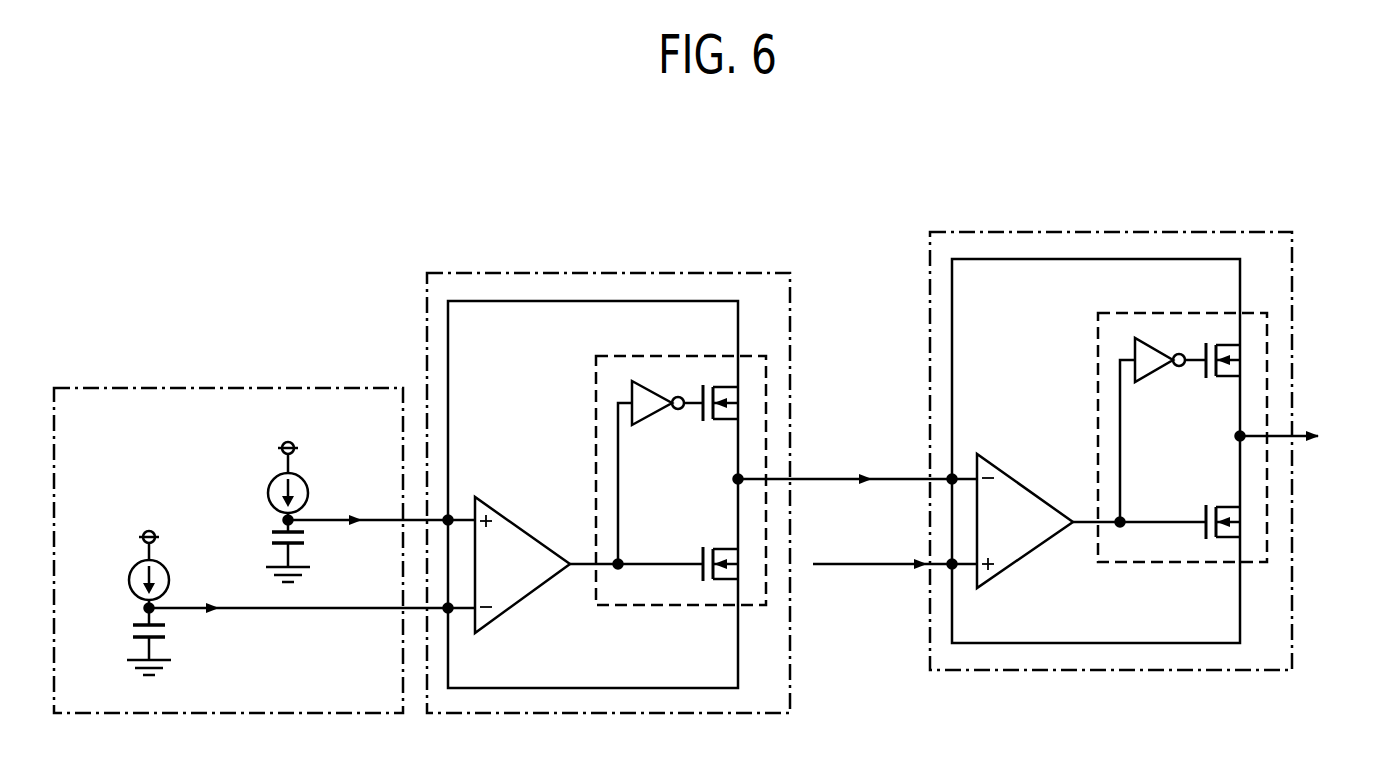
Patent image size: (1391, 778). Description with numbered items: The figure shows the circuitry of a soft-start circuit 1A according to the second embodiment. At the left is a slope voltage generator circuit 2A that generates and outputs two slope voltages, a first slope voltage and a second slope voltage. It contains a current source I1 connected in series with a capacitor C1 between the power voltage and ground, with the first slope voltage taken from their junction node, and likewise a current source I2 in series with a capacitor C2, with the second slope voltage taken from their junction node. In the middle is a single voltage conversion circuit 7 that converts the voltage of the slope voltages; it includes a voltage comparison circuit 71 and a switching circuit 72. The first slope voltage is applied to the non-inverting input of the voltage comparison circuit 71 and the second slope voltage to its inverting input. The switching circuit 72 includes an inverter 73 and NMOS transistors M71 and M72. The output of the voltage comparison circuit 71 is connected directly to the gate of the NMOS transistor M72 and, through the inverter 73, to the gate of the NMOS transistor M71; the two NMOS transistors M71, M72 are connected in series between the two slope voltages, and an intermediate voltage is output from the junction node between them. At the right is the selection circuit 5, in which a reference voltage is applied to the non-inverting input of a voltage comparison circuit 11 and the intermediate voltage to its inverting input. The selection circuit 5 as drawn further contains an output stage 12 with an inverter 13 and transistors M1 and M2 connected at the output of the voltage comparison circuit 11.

The soft-start circuit 1A is at (884, 189).
The slope voltage generator circuit 2A is at (243, 386).
The selection circuit 5 is at (1196, 227).
The voltage conversion circuit 7 is at (672, 268).
The voltage comparison circuit 71 is at (510, 520).
The switching circuit 72 is at (647, 609).
The inverter 73 is at (648, 417).
The NMOS transistor M71 is at (715, 416).
The NMOS transistor M72 is at (715, 548).
The voltage comparison circuit 11 is at (1012, 477).
The output stage 12 is at (1175, 567).
The inverter 13 is at (1156, 371).
The transistor M1 is at (1216, 374).
The transistor M2 is at (1216, 506).
The current source I1 is at (268, 491).
The current source I2 is at (129, 578).
The capacitor C1 is at (301, 555).
The capacitor C2 is at (164, 647).